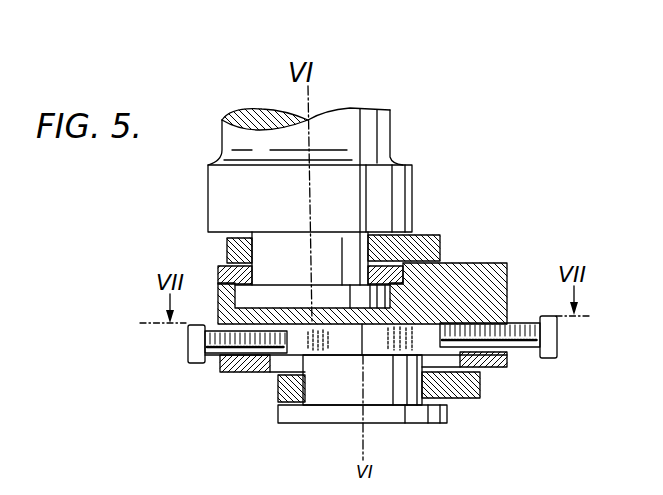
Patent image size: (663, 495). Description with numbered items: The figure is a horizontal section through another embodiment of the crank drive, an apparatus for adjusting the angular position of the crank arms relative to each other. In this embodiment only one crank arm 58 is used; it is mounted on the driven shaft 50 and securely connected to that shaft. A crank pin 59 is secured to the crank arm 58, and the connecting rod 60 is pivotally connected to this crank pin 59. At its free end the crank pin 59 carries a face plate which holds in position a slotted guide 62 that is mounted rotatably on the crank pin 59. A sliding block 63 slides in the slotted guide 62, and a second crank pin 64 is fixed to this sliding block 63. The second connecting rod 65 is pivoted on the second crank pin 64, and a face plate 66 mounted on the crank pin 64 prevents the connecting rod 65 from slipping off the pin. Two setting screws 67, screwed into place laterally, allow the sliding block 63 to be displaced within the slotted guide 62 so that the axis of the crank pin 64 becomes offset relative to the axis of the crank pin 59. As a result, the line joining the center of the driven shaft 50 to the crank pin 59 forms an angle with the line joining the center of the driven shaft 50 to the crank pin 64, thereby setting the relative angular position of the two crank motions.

The driven shaft 50 is at (372, 138).
The crank arm 58 is at (383, 192).
The crank pin 59 is at (325, 253).
The connecting rod 60 is at (440, 236).
The slotted guide 62 is at (450, 278).
The sliding block 63 is at (300, 344).
The second crank pin 64 is at (382, 392).
The second connecting rod 65 is at (458, 398).
The face plate 66 is at (326, 412).
The setting screws 67 is at (235, 368).